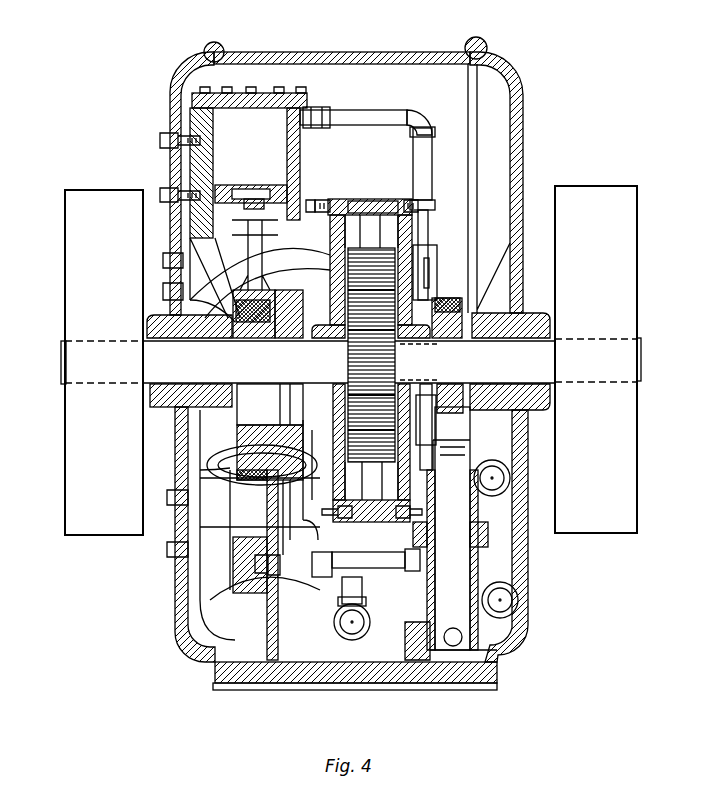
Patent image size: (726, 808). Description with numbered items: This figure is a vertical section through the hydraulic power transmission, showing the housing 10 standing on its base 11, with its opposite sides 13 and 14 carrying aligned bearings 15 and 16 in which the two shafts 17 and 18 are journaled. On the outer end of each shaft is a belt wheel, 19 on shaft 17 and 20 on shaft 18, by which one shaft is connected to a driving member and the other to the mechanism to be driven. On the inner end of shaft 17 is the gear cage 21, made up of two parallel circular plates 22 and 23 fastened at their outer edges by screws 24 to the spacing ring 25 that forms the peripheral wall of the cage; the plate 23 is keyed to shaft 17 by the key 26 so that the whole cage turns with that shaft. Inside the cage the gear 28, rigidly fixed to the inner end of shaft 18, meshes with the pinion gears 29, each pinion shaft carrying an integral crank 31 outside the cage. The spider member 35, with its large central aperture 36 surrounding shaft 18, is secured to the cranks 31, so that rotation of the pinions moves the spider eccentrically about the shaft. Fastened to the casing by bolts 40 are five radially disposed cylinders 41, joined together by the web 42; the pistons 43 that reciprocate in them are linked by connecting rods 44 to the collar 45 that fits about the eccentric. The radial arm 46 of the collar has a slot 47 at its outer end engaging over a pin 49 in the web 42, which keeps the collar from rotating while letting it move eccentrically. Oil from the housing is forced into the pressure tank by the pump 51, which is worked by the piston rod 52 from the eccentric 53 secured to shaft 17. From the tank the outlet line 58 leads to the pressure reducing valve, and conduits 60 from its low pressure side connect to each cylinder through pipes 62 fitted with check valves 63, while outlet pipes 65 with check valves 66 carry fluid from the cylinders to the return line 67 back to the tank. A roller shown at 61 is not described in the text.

The housing 10 is at (463, 44).
The base 11 is at (497, 683).
The side of housing 13 is at (528, 570).
The side of housing 14 is at (175, 605).
The bearing 15 is at (538, 408).
The bearing 16 is at (165, 408).
The shaft 17 is at (641, 377).
The shaft 18 is at (60, 378).
The belt wheel 19 is at (628, 472).
The belt wheel 20 is at (105, 538).
The gear cage 21 is at (351, 190).
The circular plate 22 is at (336, 199).
The circular plate 23 is at (405, 199).
The screws 24 is at (314, 200).
The spacing ring 25 is at (368, 199).
The key 26 is at (452, 344).
The gear 28 is at (398, 360).
The pinion gears 29 is at (415, 258).
The crank 31 is at (255, 268).
The spider member 35 is at (290, 425).
The central aperture 36 is at (252, 408).
The bolts 40 is at (160, 141).
The cylinders 41 is at (190, 110).
The web 42 is at (252, 600).
The pistons 43 is at (275, 188).
The connecting rods 44 is at (258, 268).
The collar 45 is at (200, 478).
The radial arm 46 is at (200, 527).
The slot 47 is at (278, 630).
The pin 49 is at (283, 565).
The pump 51 is at (418, 625).
The piston rod 52 is at (455, 440).
The eccentric 53 is at (447, 300).
The outlet line 58 is at (518, 600).
The conduits 60 is at (432, 174).
The roller 61 is at (510, 478).
The pipes 62 is at (378, 112).
The check valves 63 is at (318, 107).
The outlet pipes 65 is at (340, 598).
The check valves 66 is at (320, 515).
The return line 67 is at (357, 640).